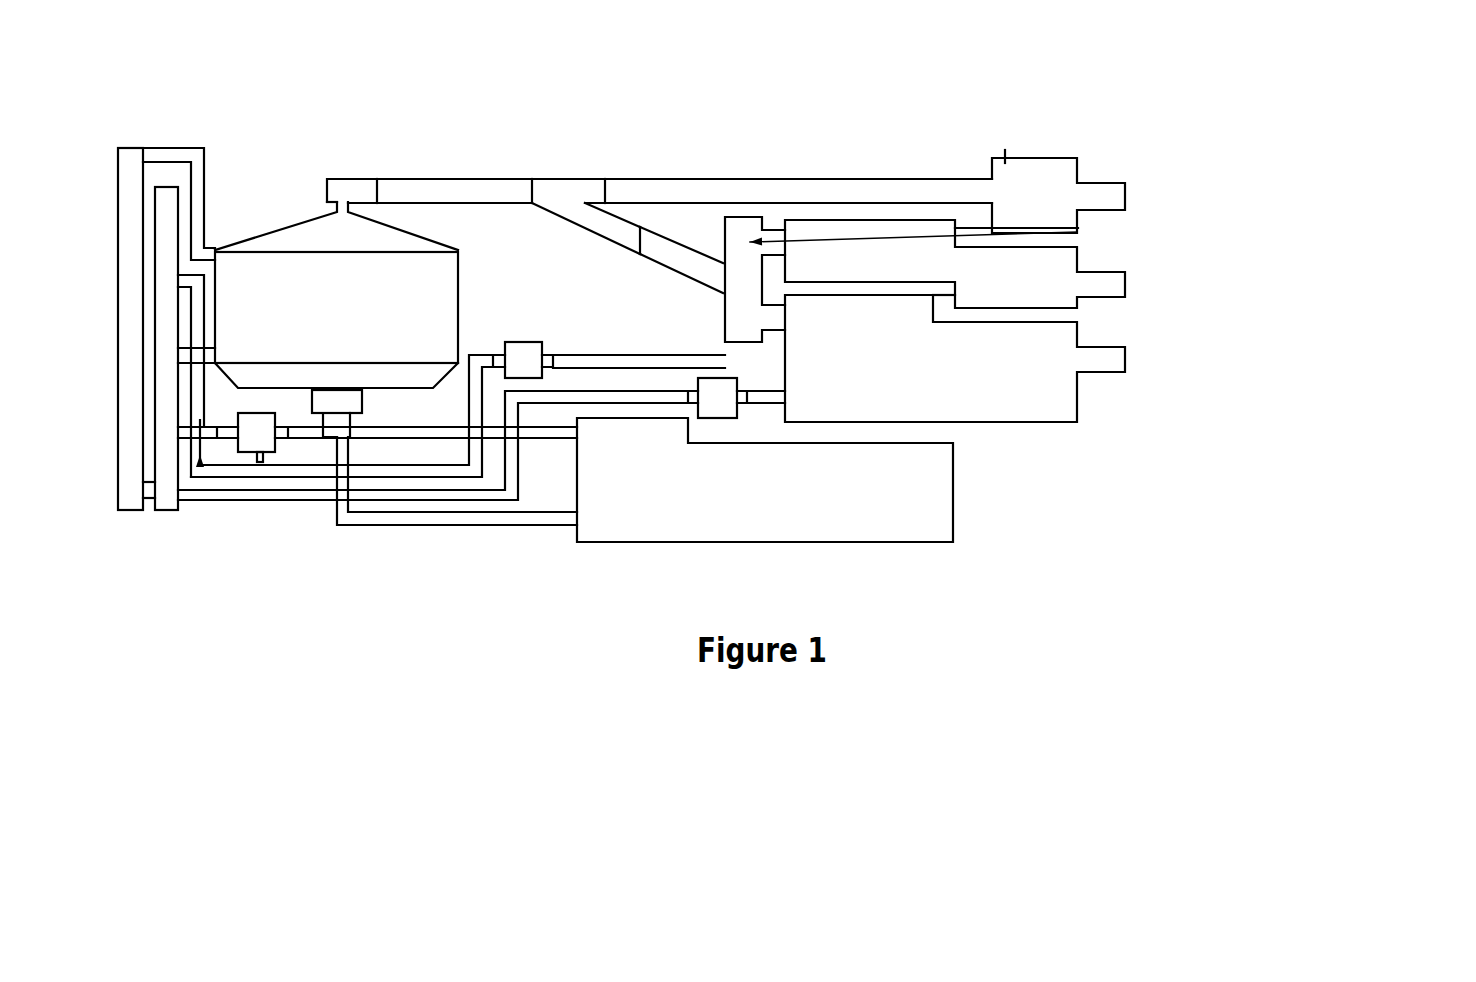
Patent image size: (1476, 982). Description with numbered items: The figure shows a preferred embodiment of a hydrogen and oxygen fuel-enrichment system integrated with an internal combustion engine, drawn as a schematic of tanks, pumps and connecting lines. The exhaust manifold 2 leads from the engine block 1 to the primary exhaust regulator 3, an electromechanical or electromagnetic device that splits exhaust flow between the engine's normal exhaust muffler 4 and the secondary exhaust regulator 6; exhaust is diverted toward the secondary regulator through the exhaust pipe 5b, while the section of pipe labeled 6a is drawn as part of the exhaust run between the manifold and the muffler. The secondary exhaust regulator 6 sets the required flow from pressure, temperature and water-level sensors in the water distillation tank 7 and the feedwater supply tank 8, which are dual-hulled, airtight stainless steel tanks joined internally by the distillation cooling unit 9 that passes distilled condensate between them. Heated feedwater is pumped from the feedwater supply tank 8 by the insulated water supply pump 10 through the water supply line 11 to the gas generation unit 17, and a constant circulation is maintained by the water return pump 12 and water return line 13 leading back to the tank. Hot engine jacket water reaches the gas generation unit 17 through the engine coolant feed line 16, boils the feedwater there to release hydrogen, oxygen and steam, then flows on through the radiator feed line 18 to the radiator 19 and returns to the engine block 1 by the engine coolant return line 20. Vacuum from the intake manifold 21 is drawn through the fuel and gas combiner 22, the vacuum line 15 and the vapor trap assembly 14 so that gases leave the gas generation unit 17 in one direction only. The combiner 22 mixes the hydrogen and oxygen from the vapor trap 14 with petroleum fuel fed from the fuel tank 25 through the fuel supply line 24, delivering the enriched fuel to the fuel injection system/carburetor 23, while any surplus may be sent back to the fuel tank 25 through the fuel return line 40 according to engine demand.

The engine block 1 is at (336, 307).
The exhaust manifold 2 is at (335, 211).
The primary exhaust regulator 3 is at (724, 174).
The exhaust muffler 4 is at (1116, 191).
The exhaust pipe 5b is at (747, 217).
The Exhaust Pipe 6a is at (659, 165).
The secondary exhaust regulator 6 is at (1078, 220).
The water distillation tank 7 is at (925, 279).
The feedwater supply tank 8 is at (955, 358).
The distillation cooling unit 9 is at (928, 317).
The water supply pump 10 is at (935, 425).
The water supply line 11 is at (485, 445).
The water return pump 12 is at (584, 332).
The water return line 13 is at (616, 343).
The vapor trap assembly 14 is at (333, 533).
The vacuum line 15 is at (342, 522).
The engine coolant feed line 16 is at (322, 501).
The gas generation unit 17 is at (255, 479).
The radiator feed line 18 is at (252, 641).
The radiator 19 is at (186, 489).
The engine coolant return line 20 is at (320, 177).
The intake manifold 21 is at (336, 352).
The fuel and gas combiner 22 is at (424, 514).
The fuel injection system/carburetor 23 is at (498, 487).
The fuel supply line 24 is at (577, 525).
The fuel tank 25 is at (927, 477).
The fuel return line 40 is at (579, 431).